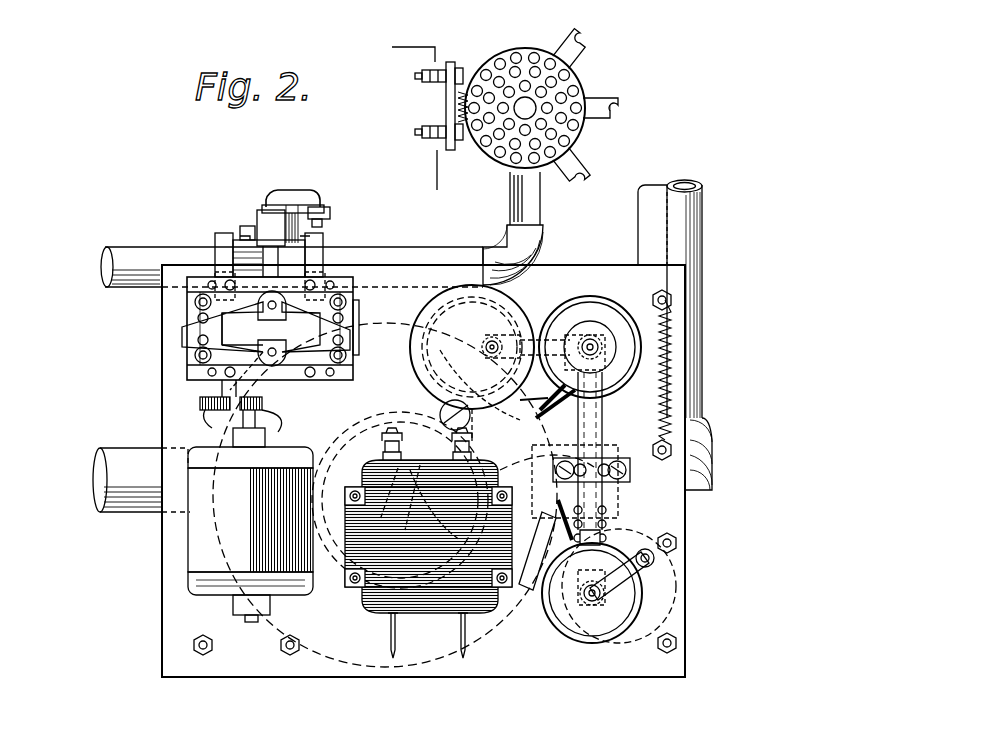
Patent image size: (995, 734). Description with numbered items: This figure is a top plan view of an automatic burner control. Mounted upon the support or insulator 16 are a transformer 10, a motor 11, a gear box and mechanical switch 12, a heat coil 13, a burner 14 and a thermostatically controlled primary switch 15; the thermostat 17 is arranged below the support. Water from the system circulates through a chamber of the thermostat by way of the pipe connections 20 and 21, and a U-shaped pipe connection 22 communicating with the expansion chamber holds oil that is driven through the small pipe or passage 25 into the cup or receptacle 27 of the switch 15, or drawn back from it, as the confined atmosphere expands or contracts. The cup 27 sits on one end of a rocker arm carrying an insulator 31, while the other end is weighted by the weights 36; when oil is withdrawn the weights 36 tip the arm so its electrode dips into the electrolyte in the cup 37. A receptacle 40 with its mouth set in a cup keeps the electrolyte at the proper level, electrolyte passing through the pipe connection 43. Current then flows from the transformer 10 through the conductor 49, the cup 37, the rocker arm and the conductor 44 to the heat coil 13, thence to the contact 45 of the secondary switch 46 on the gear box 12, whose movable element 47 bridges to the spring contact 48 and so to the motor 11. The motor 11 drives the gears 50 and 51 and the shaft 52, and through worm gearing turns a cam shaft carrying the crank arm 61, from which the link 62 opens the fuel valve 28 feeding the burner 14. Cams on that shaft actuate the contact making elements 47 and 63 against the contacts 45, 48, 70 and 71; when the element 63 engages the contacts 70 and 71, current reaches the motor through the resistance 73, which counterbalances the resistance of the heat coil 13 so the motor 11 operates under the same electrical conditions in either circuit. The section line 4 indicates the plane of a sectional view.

The section line 4- 4 is at (160, 325).
The transformer 10 is at (358, 560).
The motor 11 is at (222, 502).
The gear box and mechanical switch 12 is at (273, 328).
The heat coil 13 is at (452, 105).
The burner 14 is at (562, 143).
The thermostatically controlled electric switch 15 is at (602, 435).
The support or insulator 16 is at (549, 551).
The thermostat 17 is at (348, 630).
The pipe connection 20 is at (128, 512).
The pipe connection 21 is at (703, 408).
The pipe connection 22 is at (518, 585).
The small pipe or passage 25 is at (645, 568).
The cup or receptacle 27 is at (580, 642).
The fuel valve 28 is at (248, 243).
The insulator 31 is at (585, 405).
The weights 36 is at (595, 325).
The cup 37 is at (585, 312).
The receptacle 40 is at (490, 347).
The pipe connection 43 is at (538, 345).
The conductor 44 is at (556, 418).
The contact 45 is at (316, 333).
The secondary switch 46 is at (222, 327).
The movable element 47 is at (272, 366).
The spring contact 48 is at (239, 354).
The conductor 49 is at (536, 405).
The gear 50 is at (265, 402).
The gear 51 is at (205, 420).
The shaft 52 is at (205, 398).
The crank arm 61 is at (268, 212).
The link 62 is at (305, 198).
The contact making element 63 is at (278, 310).
The contact making element 70 is at (236, 286).
The contact making element 71 is at (306, 286).
The resistance 73 is at (672, 325).